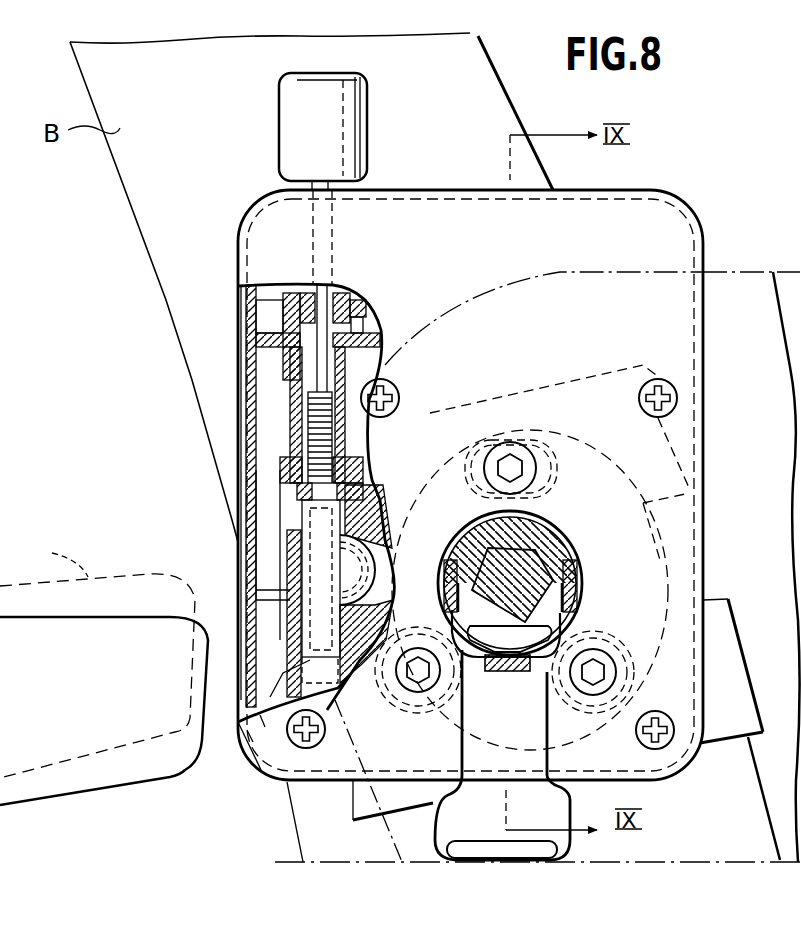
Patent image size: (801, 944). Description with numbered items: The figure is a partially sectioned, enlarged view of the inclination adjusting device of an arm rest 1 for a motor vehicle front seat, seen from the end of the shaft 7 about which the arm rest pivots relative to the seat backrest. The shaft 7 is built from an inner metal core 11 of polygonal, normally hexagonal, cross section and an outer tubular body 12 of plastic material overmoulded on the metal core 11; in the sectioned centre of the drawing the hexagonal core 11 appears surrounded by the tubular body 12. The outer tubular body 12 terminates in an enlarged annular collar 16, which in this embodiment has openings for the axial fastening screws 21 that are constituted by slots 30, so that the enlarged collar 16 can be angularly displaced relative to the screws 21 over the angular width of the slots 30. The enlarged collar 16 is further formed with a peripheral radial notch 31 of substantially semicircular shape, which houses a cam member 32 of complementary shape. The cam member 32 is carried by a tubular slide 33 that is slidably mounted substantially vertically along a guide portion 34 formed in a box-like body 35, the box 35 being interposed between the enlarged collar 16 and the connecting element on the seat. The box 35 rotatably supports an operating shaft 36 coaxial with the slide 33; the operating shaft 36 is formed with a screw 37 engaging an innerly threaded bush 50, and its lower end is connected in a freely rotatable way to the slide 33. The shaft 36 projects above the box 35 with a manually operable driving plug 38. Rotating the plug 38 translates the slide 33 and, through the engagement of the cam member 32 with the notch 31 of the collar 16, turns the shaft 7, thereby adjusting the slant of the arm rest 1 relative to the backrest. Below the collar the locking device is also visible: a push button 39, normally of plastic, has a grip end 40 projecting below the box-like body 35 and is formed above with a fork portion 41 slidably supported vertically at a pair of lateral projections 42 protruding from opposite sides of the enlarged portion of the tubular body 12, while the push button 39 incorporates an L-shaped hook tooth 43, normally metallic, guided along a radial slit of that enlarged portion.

The arm rest 1 is at (98, 623).
The shaft 7 is at (580, 546).
The inner metal core 11 is at (522, 567).
The outer tubular body 12 is at (520, 532).
The enlarged annular collar 16 is at (377, 523).
The fastening screws 21 is at (508, 450).
The slots 30 is at (563, 437).
The peripheral radial notch 31 is at (317, 653).
The cam member 32 is at (355, 563).
The tubular slide 33 is at (327, 587).
The guide portion 34 is at (243, 752).
The box-like body 35 is at (272, 237).
The operating shaft 36 is at (340, 287).
The screw 37 is at (400, 415).
The manually operable driving plug 38 is at (330, 113).
The push button 39 is at (430, 833).
The grip end 40 is at (483, 848).
The fork portion 41 is at (580, 634).
The lateral projections 42 is at (453, 578).
The L-shaped hook tooth 43 is at (520, 673).
The innerly threaded bush 50 is at (300, 383).